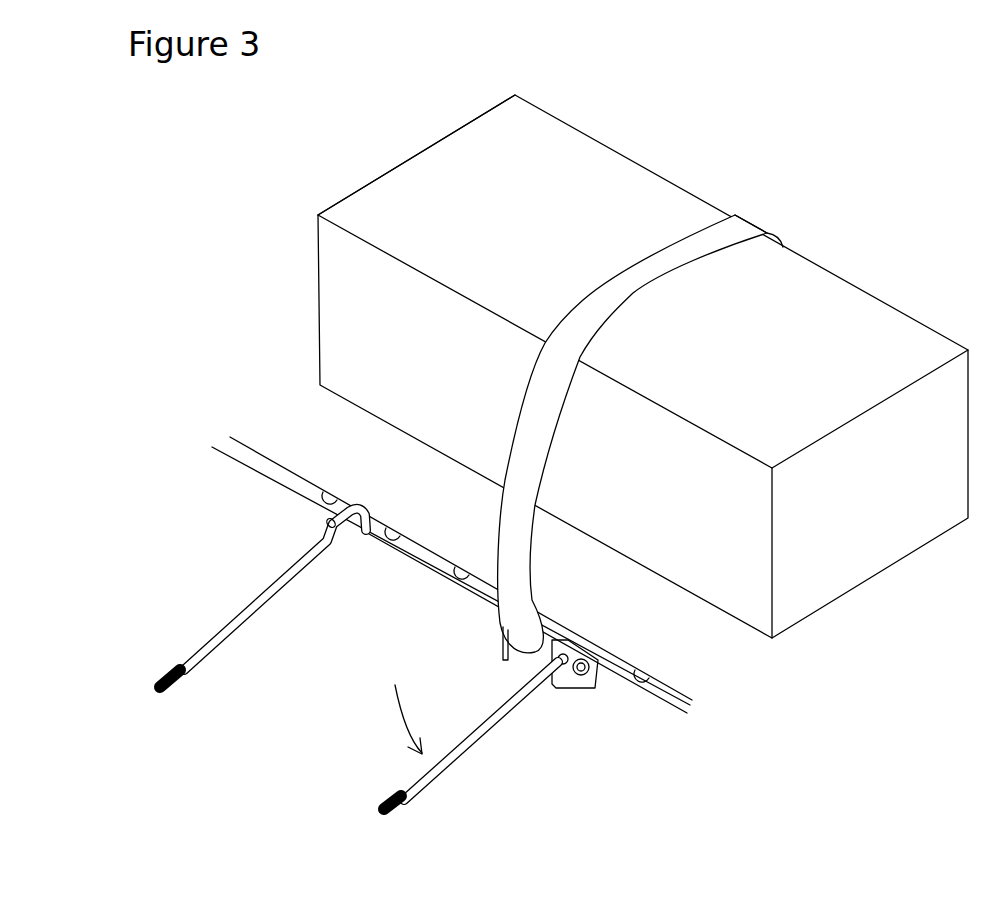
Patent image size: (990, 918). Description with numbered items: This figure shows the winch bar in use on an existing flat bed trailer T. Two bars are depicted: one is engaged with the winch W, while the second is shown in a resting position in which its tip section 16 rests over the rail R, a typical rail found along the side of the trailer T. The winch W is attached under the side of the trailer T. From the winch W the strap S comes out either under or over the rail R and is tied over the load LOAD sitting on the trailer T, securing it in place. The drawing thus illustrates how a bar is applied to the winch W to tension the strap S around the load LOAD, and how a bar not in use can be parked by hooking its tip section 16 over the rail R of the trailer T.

The tip section 16 is at (328, 511).
The strap S is at (535, 477).
The trailer T is at (622, 662).
The rail R is at (660, 702).
The winch W is at (565, 685).
The load LOAD is at (735, 598).